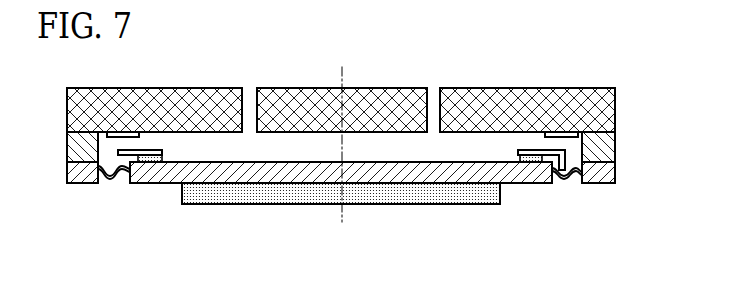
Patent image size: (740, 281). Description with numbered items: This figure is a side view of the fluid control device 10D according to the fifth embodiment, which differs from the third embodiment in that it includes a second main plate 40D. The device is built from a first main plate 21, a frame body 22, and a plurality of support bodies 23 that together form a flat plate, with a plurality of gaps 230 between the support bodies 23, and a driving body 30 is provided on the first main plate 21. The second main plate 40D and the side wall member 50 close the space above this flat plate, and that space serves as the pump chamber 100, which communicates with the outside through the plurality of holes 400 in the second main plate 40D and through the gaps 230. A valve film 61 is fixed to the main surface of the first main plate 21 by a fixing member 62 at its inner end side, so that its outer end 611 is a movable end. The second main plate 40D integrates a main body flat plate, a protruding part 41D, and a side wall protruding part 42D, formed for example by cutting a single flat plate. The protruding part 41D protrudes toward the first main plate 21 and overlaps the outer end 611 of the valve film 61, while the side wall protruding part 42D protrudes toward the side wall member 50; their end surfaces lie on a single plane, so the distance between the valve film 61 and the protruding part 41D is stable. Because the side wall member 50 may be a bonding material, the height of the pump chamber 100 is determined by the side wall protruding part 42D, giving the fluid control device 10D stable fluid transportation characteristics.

The fluid control device 10D is at (583, 55).
The holes 400 is at (248, 91).
The second main plate 40D is at (616, 106).
The protruding part 41D is at (581, 134).
The side wall protruding part 42D is at (616, 133).
The side wall member 50 is at (614, 147).
The frame body 22 is at (614, 173).
The first main plate 21 is at (376, 174).
The driving body 30 is at (415, 196).
The valve film 61 is at (545, 150).
The fixing member 62 is at (531, 163).
The support bodies 23 is at (579, 185).
The outer end 611 is at (562, 173).
The gaps 230 is at (570, 182).
The pump chamber 100 is at (308, 148).